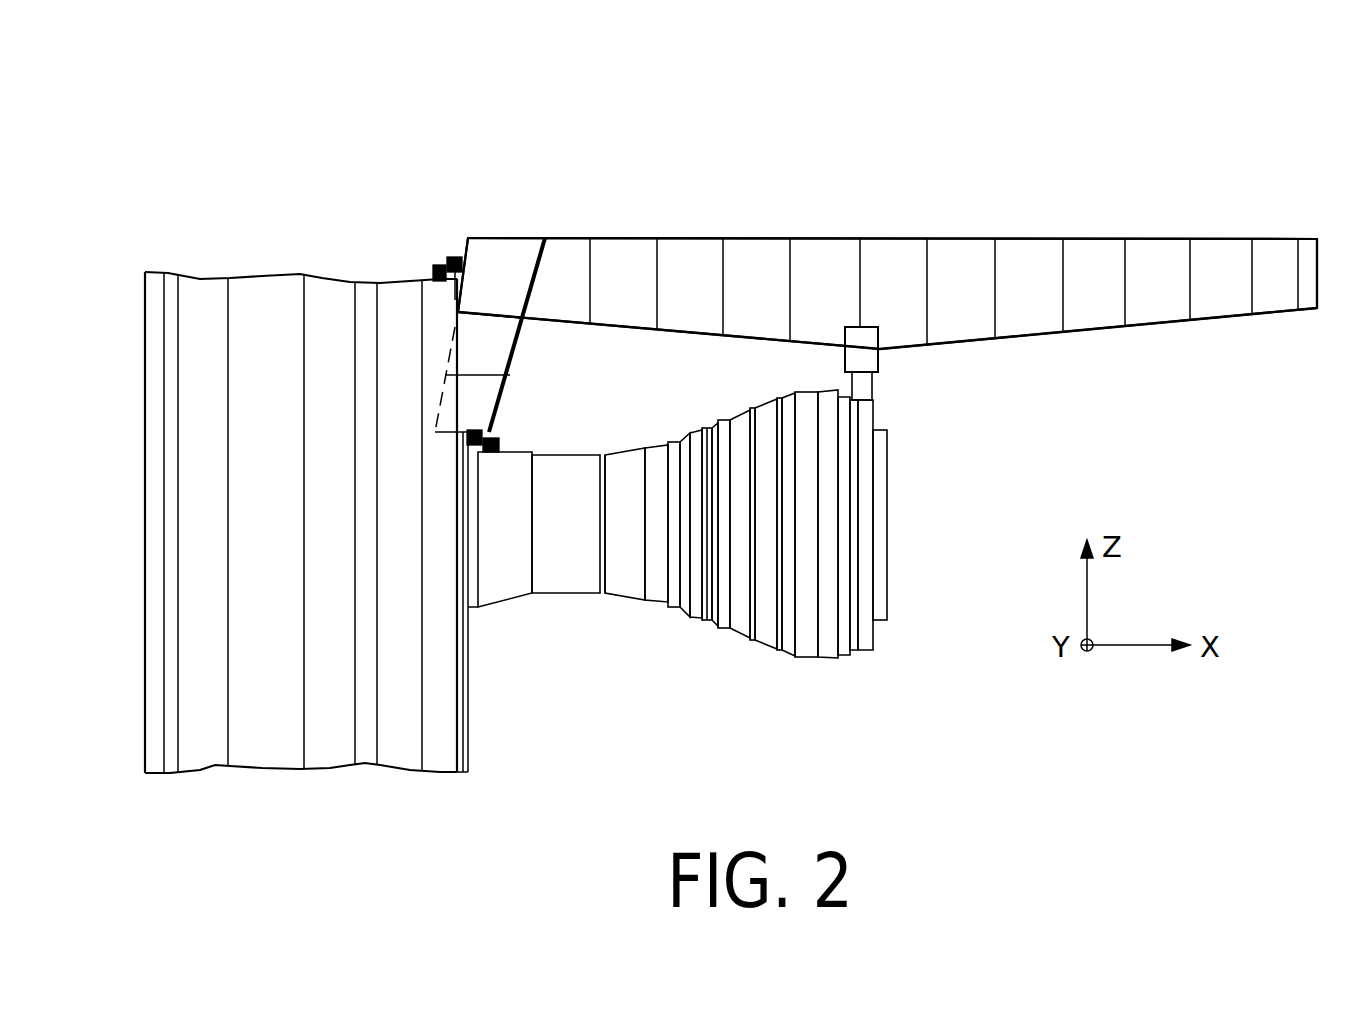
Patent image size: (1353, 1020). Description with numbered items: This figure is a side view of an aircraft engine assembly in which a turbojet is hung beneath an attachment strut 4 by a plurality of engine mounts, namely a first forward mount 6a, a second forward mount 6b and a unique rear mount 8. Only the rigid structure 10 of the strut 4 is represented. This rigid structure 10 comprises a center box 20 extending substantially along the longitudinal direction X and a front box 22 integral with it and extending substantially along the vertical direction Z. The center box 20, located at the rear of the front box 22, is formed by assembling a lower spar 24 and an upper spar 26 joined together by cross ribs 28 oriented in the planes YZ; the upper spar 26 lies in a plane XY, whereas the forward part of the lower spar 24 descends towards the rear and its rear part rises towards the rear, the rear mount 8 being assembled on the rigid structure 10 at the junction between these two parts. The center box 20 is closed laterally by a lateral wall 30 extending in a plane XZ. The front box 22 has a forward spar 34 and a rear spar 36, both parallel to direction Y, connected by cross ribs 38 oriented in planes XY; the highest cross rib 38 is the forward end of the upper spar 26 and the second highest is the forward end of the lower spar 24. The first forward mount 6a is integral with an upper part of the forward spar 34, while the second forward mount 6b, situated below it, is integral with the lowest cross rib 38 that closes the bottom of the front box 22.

The attachment strut 4 is at (1140, 170).
The first forward mount 6a is at (443, 262).
The second forward mount 6b is at (475, 448).
The rear mount 8 is at (865, 355).
The rigid structure 10 is at (1003, 130).
The center box 20 is at (1320, 208).
The front box 22 is at (588, 206).
The lower spar 24 is at (1170, 325).
The upper spar 26 is at (1032, 240).
The cross ribs 28 is at (1106, 292).
The lateral wall 30 is at (472, 343).
The forward spar 34 is at (445, 381).
The rear spar 36 is at (520, 343).
The cross ribs 38 is at (478, 372).